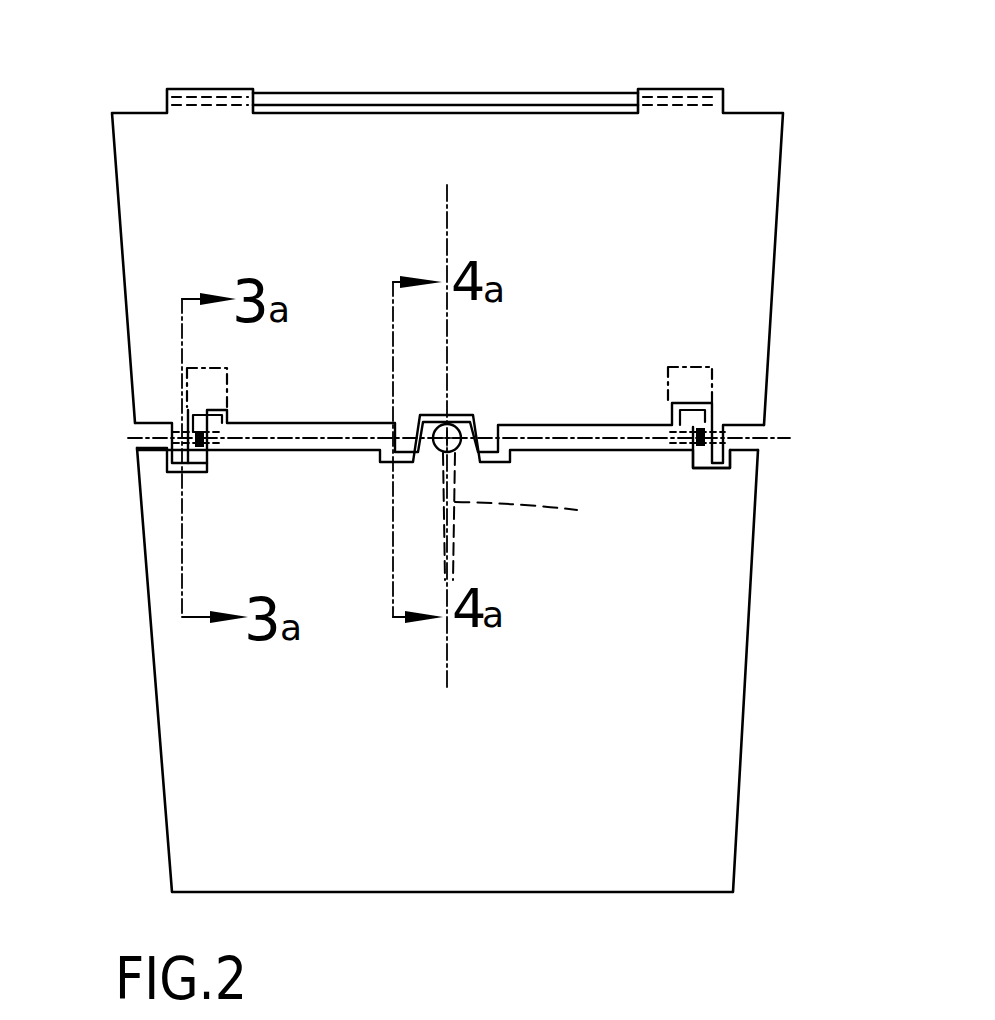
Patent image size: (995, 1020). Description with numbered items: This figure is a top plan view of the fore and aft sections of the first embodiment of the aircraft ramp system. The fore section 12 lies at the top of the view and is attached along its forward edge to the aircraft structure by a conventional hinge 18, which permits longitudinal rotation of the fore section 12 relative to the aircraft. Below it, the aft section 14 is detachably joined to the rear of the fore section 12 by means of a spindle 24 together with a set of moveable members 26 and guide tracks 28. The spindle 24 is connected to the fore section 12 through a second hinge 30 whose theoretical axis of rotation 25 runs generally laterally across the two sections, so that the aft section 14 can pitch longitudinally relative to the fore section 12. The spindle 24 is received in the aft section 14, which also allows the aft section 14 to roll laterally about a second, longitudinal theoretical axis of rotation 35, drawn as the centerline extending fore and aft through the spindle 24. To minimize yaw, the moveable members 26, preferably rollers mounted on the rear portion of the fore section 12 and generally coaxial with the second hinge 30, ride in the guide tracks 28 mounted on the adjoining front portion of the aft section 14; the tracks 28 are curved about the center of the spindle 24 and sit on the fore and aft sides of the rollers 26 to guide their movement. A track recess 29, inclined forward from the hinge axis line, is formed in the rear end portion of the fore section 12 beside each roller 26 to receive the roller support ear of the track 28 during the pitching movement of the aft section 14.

The fore section 12 is at (633, 207).
The aft section 14 is at (645, 775).
The hinge 18 is at (683, 90).
The spindle 24 is at (577, 510).
The theoretical axis of rotation 25 is at (258, 445).
The moveable members 26 is at (712, 424).
The guide tracks 28 is at (717, 470).
The track recess 29 is at (207, 410).
The second hinge 30 is at (460, 432).
The theoretical axis of rotation 35 is at (460, 657).